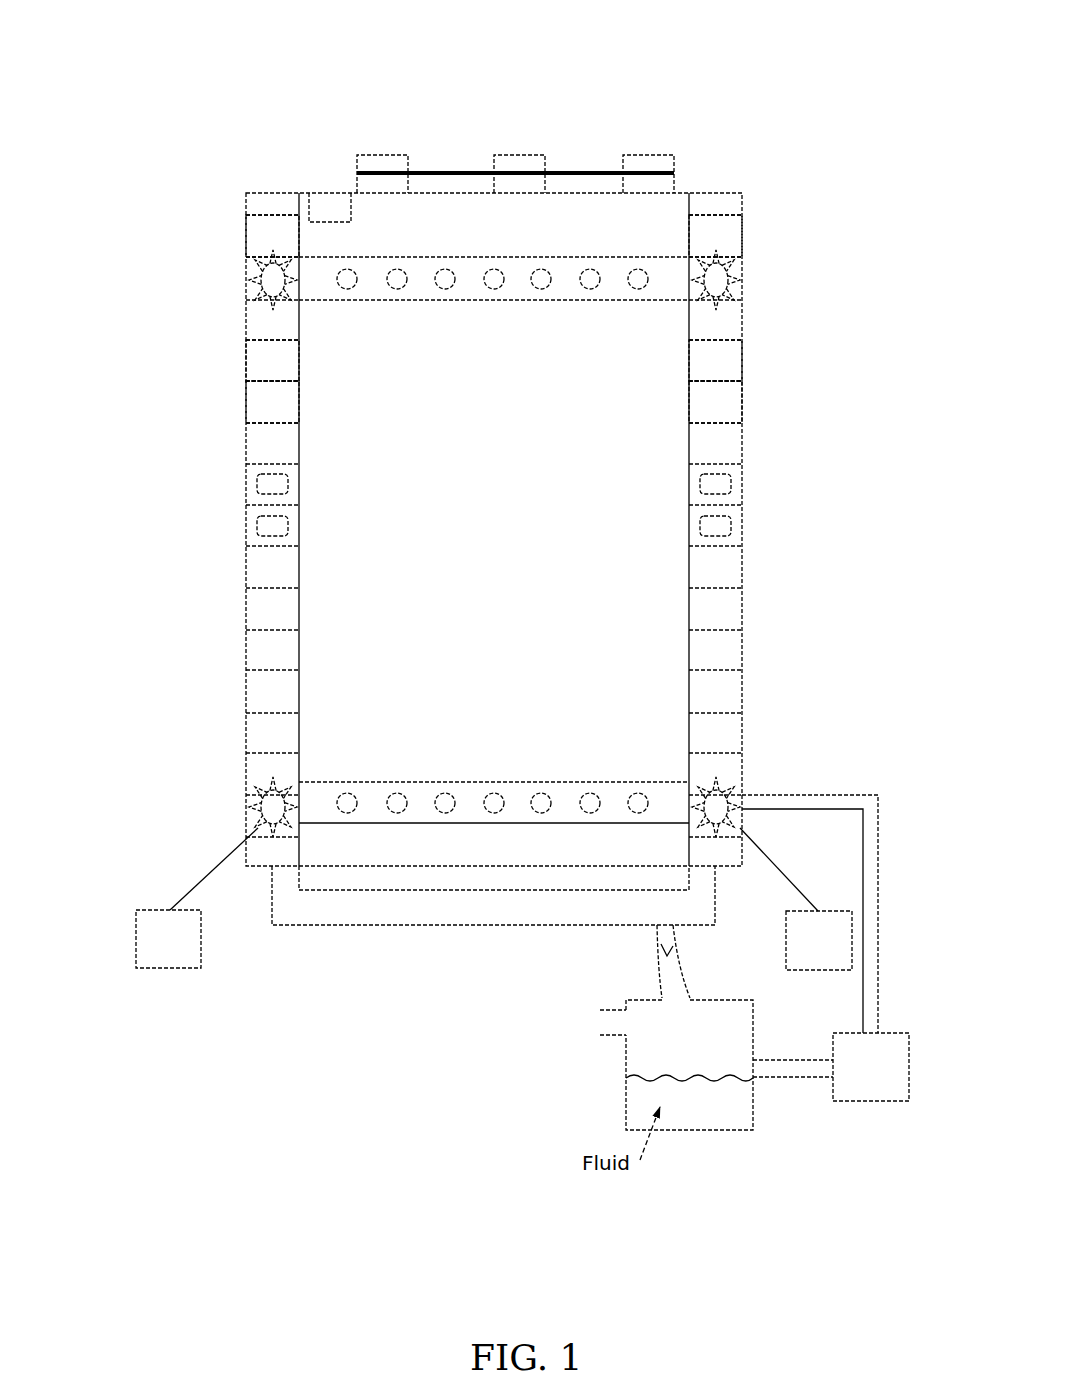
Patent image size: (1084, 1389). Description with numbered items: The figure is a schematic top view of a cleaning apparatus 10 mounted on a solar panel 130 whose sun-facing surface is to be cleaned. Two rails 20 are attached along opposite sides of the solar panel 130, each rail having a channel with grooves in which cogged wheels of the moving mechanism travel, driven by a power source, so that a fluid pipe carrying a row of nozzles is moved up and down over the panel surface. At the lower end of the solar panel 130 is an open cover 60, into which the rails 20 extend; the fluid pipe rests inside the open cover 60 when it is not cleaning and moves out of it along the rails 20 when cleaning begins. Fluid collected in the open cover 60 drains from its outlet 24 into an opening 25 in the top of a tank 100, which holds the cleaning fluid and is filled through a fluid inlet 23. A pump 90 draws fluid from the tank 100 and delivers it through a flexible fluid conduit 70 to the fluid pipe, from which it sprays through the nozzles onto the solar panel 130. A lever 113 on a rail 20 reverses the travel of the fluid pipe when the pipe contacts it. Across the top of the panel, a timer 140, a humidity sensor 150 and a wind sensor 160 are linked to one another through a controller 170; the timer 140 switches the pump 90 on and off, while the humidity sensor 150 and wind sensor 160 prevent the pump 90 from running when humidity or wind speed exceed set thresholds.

The cleaning apparatus 10 is at (170, 655).
The rails 20 is at (258, 872).
The fluid inlet 23 is at (598, 1024).
The outlet 24 is at (650, 929).
The opening 25 is at (670, 997).
The open cover 60 is at (448, 930).
The fluid conduit 70 is at (882, 898).
The pump 90 is at (865, 1105).
The tank 100 is at (624, 1065).
The lever 113 is at (325, 190).
The solar panel 130 is at (630, 525).
The timer 140 is at (650, 152).
The humidity sensor 150 is at (521, 152).
The wind sensor 160 is at (380, 152).
The controller 170 is at (448, 170).